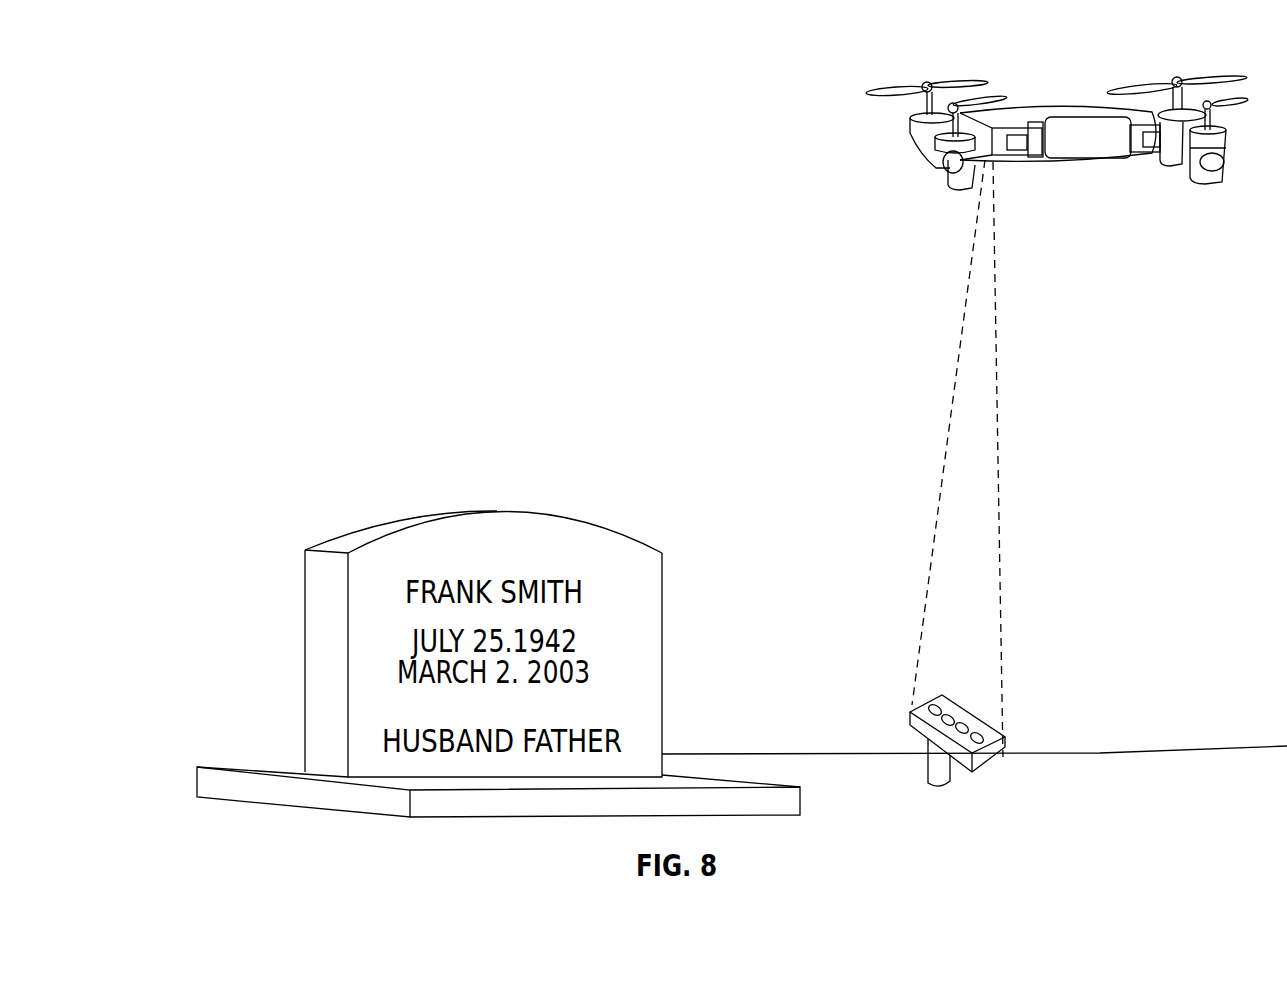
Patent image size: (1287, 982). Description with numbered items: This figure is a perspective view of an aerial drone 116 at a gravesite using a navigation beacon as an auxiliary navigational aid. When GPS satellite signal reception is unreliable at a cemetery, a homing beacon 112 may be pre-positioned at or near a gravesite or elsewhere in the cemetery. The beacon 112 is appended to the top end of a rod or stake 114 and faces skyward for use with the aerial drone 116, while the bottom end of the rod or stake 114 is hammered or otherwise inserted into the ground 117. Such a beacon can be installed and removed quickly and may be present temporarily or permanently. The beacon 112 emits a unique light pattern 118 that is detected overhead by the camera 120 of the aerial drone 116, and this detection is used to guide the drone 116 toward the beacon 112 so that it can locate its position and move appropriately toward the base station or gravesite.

The homing beacon 112 is at (983, 757).
The rod or stake 114 is at (933, 773).
The aerial drone 116 is at (1093, 147).
The ground 117 is at (1097, 770).
The unique light pattern 118 is at (988, 632).
The camera 120 is at (993, 110).